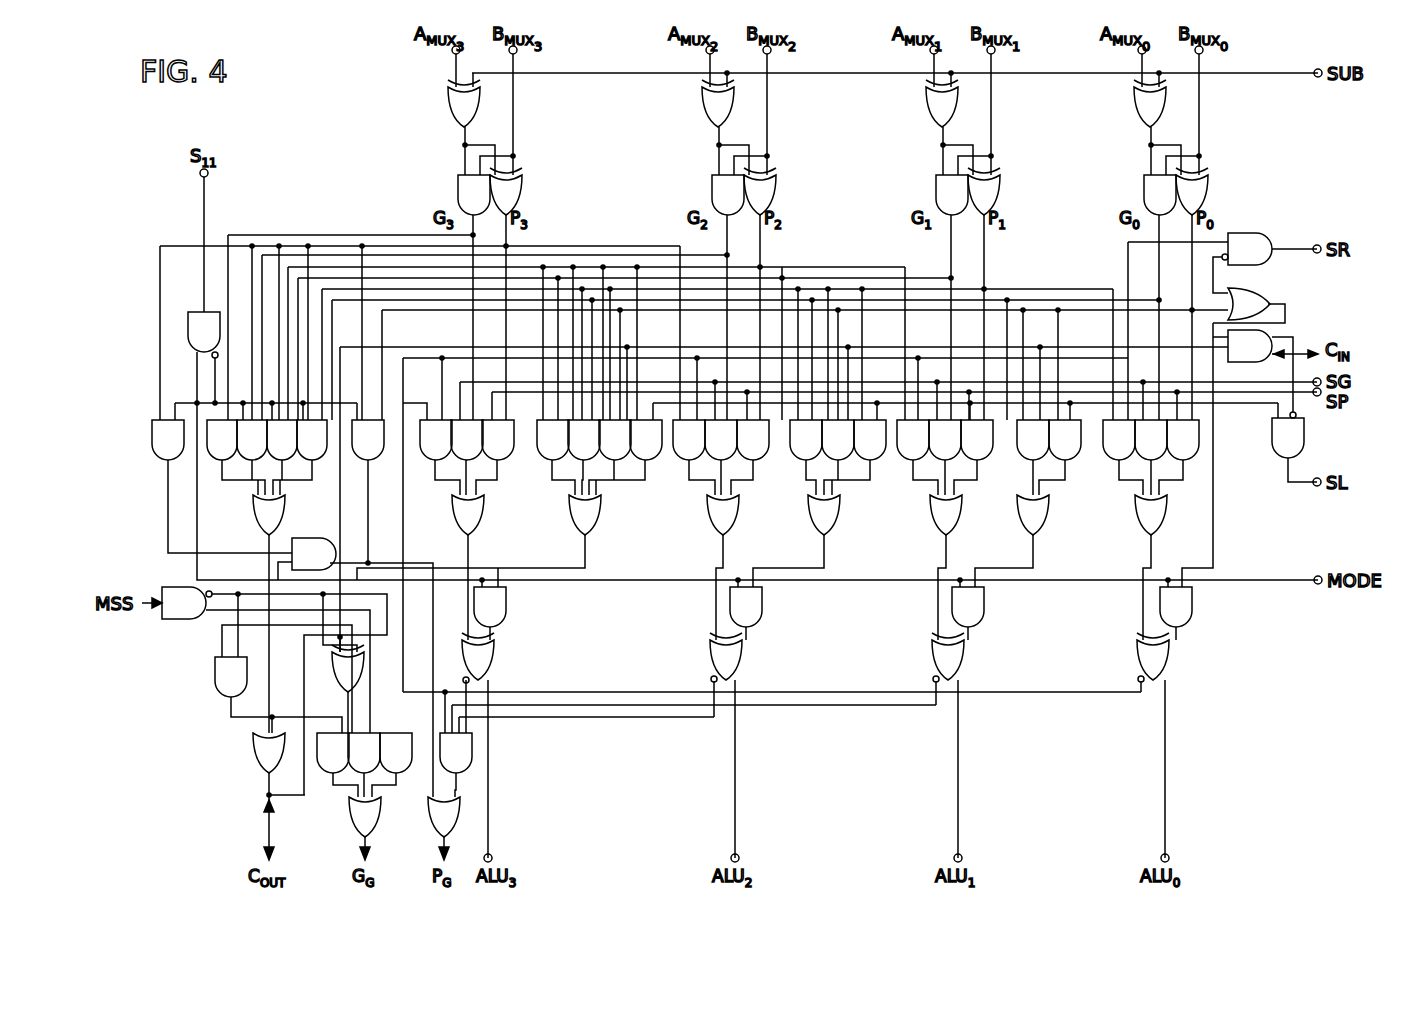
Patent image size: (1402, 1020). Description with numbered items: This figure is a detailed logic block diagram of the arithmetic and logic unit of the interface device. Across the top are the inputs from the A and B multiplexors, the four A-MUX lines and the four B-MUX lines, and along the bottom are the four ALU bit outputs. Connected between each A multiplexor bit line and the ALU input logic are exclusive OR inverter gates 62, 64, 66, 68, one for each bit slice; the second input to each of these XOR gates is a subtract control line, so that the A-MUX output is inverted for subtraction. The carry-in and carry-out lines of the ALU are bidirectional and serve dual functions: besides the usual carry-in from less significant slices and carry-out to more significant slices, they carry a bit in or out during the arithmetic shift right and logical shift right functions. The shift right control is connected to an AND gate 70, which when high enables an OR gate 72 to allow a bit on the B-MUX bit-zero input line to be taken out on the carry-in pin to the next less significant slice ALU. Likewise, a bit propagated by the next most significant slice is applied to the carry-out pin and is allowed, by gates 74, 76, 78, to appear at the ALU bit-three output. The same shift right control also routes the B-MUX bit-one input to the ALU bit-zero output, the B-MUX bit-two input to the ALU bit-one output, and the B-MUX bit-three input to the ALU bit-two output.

The exclusive OR inverter gate 62 is at (1134, 122).
The exclusive OR inverter gate 64 is at (926, 122).
The exclusive OR inverter gate 66 is at (702, 122).
The exclusive OR inverter gate 68 is at (448, 122).
The AND gate 70 is at (1257, 233).
The OR gate 72 is at (1266, 293).
The gate 74 is at (437, 412).
The gate 76 is at (485, 525).
The gate 78 is at (494, 673).